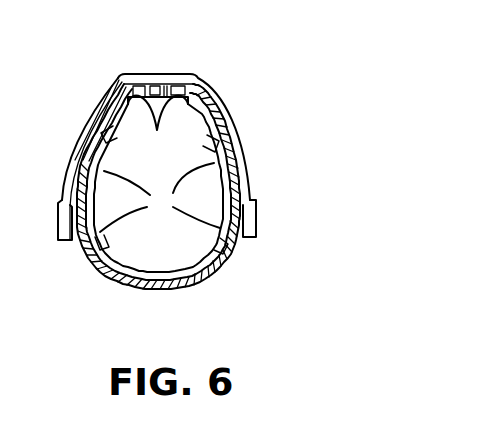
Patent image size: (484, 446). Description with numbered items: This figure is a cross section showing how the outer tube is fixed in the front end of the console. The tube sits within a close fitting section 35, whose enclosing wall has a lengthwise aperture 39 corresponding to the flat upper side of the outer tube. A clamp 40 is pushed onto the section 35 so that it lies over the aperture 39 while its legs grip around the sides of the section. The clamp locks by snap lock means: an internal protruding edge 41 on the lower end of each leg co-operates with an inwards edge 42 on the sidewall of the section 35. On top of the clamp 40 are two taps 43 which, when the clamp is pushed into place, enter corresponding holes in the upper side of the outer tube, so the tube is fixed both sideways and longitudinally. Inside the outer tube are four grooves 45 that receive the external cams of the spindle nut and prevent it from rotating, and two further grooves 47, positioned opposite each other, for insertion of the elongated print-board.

The close fitting section 35 is at (93, 255).
The lengthwise aperture 39 is at (137, 81).
The clamp 40 is at (84, 128).
The internal protruding edge 41 is at (71, 207).
The inwards edge 42 is at (72, 185).
The taps 43 is at (174, 84).
The grooves 45 is at (160, 197).
The further grooves 47 is at (158, 130).